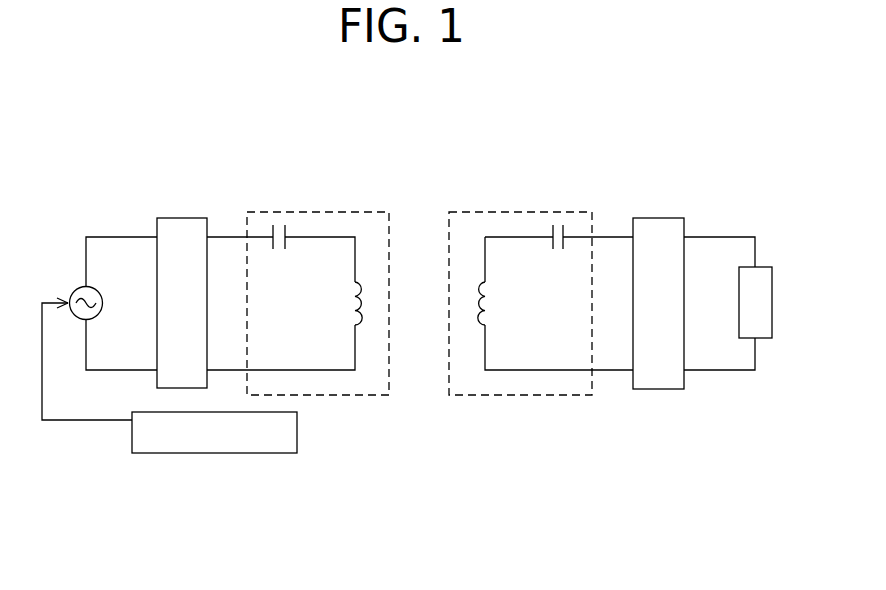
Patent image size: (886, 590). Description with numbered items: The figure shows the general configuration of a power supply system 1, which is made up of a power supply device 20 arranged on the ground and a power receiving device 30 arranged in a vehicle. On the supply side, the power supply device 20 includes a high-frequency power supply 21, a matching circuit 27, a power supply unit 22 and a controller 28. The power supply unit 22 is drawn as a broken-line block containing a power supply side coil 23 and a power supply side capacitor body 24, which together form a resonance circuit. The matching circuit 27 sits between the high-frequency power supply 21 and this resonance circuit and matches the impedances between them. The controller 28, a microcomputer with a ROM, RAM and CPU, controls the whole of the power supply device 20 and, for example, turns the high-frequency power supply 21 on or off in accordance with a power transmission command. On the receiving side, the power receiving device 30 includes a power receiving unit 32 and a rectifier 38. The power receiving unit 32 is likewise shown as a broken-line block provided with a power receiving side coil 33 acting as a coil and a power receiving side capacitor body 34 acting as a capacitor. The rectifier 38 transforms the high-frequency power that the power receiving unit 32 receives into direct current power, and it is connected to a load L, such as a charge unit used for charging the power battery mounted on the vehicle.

The power supply system 1 is at (618, 130).
The power supply device 20 is at (232, 495).
The high-frequency power supply 21 is at (75, 291).
The power supply unit 22 is at (334, 212).
The power supply side coil 23 is at (364, 280).
The power supply side capacitor body 24 is at (290, 230).
The matching circuit 27 is at (182, 218).
The controller 28 is at (165, 453).
The power receiving device 30 is at (651, 418).
The power receiving unit 32 is at (523, 212).
The power receiving side coil 33 is at (481, 282).
The power receiving side capacitor body 34 is at (565, 235).
The rectifier 38 is at (655, 218).
The load L is at (772, 297).